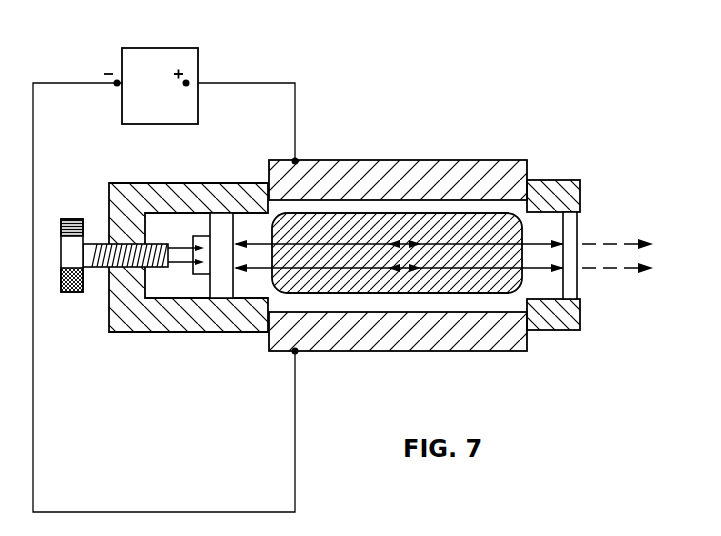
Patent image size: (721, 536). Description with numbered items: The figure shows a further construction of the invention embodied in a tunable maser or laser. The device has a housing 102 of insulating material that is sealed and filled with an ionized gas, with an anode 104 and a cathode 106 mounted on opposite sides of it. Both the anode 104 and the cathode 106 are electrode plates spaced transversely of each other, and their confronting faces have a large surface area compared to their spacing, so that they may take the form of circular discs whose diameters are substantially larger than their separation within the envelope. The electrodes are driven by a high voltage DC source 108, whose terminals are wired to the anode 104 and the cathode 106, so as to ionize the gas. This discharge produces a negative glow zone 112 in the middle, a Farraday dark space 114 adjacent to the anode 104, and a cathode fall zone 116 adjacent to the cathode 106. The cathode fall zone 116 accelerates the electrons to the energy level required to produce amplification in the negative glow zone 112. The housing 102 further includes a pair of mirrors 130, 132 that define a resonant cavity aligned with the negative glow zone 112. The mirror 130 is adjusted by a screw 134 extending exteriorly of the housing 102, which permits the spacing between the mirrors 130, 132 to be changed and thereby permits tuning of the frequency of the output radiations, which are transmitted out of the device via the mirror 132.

The housing 102 is at (232, 183).
The anode 104 is at (399, 165).
The cathode 106 is at (327, 343).
The high voltage DC source 108 is at (200, 66).
The negative glow zone 112 is at (478, 283).
The Farraday dark space 114 is at (472, 208).
The cathode fall zone 116 is at (445, 300).
The mirror 130 is at (221, 300).
The mirror 132 is at (573, 275).
The screw 134 is at (76, 292).